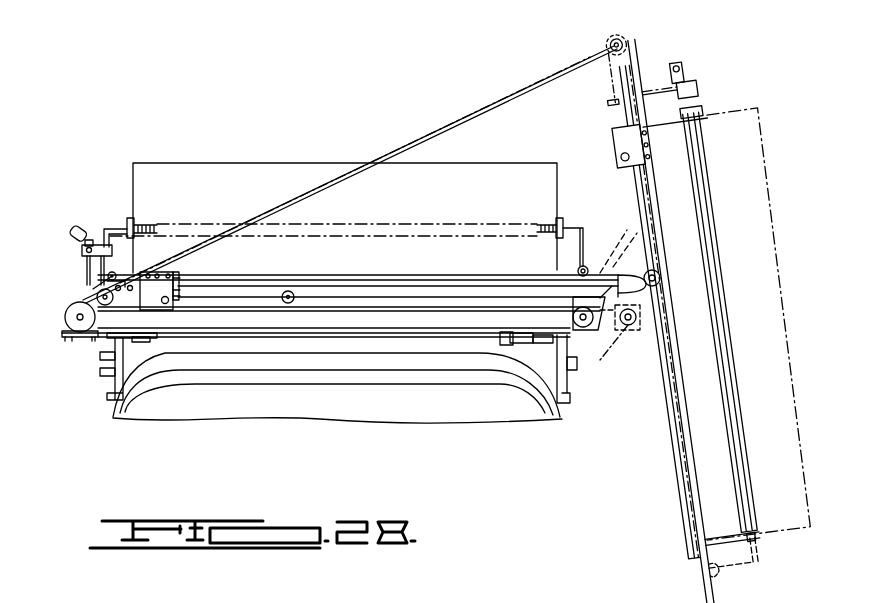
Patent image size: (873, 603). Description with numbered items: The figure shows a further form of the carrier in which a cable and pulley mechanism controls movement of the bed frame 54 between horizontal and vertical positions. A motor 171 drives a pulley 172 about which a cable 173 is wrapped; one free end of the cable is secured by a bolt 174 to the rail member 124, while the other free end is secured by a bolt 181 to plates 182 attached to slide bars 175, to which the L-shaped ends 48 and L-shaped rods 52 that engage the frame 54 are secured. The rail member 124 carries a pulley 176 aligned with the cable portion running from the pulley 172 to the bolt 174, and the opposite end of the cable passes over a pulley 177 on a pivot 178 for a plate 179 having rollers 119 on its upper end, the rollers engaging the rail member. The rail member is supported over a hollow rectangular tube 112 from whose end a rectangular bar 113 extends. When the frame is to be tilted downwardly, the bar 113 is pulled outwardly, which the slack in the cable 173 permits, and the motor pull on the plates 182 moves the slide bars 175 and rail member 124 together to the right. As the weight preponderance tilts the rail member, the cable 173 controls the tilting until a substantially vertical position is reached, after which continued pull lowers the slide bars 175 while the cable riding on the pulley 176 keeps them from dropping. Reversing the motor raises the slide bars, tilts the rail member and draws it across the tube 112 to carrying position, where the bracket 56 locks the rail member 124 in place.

The L-shaped ends 48 is at (572, 226).
The L-shaped rods 52 is at (103, 230).
The bed frame 54 is at (516, 172).
The bracket 56 is at (102, 245).
The hollow rectangular tube 112 is at (546, 322).
The rectangular bar 113 is at (600, 352).
The rollers 119 is at (660, 210).
The rail member 124 is at (623, 298).
The motor 171 is at (68, 302).
The pulley 172 is at (86, 321).
The cable 173 is at (477, 100).
The bolt 174 is at (110, 278).
The slide bars 175 is at (620, 283).
The pulley 176 is at (625, 40).
The pulley 177 is at (582, 327).
The pivot 178 is at (570, 317).
The plate 179 is at (580, 297).
The bolt 181 is at (168, 283).
The plates 182 is at (148, 273).